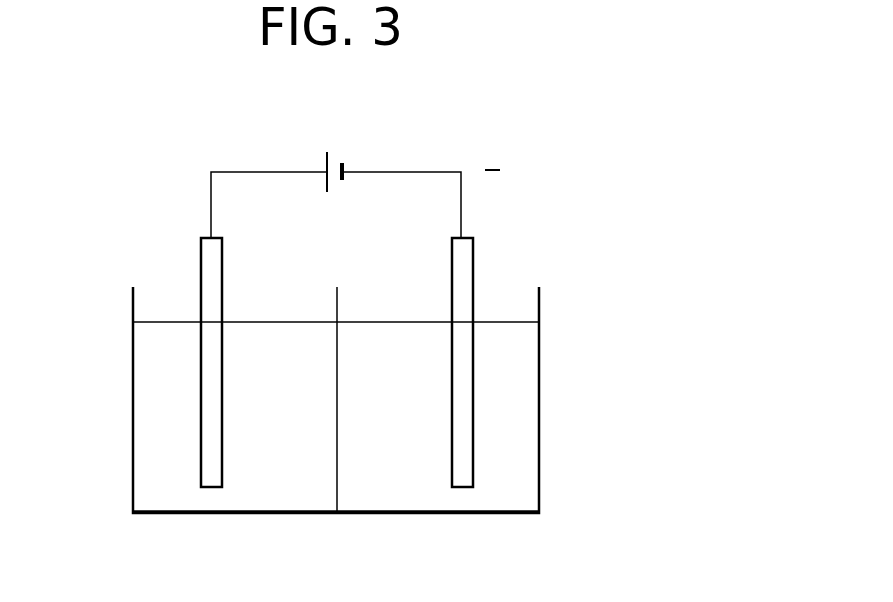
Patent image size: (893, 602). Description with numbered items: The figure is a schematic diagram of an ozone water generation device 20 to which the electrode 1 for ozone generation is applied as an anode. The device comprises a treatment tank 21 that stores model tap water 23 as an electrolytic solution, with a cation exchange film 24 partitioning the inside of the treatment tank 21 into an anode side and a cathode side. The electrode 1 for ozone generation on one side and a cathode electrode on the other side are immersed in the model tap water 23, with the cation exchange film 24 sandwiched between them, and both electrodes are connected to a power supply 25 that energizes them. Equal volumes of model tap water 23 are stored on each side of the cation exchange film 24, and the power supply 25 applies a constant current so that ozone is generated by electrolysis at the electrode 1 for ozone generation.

The ozone water generation device 20 is at (580, 85).
The power supply 25 is at (338, 158).
The electrode for ozone generation 1 is at (209, 342).
The treatment tank 21 is at (133, 458).
The model tap water 23 is at (272, 490).
The cation exchange film 24 is at (337, 488).